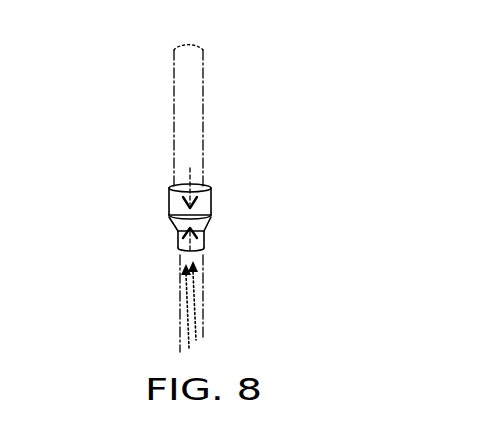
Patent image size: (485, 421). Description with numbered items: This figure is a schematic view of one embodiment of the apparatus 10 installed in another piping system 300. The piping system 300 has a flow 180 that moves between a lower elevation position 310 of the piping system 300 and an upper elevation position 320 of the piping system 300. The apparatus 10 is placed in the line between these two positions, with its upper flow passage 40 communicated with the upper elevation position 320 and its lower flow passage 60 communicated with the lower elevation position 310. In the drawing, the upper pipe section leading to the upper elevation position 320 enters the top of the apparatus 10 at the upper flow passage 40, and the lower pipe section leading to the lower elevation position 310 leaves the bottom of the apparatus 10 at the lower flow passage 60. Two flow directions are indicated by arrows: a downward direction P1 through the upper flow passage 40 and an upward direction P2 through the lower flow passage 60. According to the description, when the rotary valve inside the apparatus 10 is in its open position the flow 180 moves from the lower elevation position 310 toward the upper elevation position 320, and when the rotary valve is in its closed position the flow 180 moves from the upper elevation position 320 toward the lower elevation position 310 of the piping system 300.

The piping system 300 is at (249, 74).
The upper elevation position 320 is at (185, 135).
The apparatus 10 is at (231, 210).
The upper flow passage 40 is at (212, 191).
The lower flow passage 60 is at (207, 222).
The first flow path P1 is at (192, 178).
The second flow path P2 is at (188, 233).
The flow 180 is at (182, 322).
The lower elevation position 310 is at (205, 349).